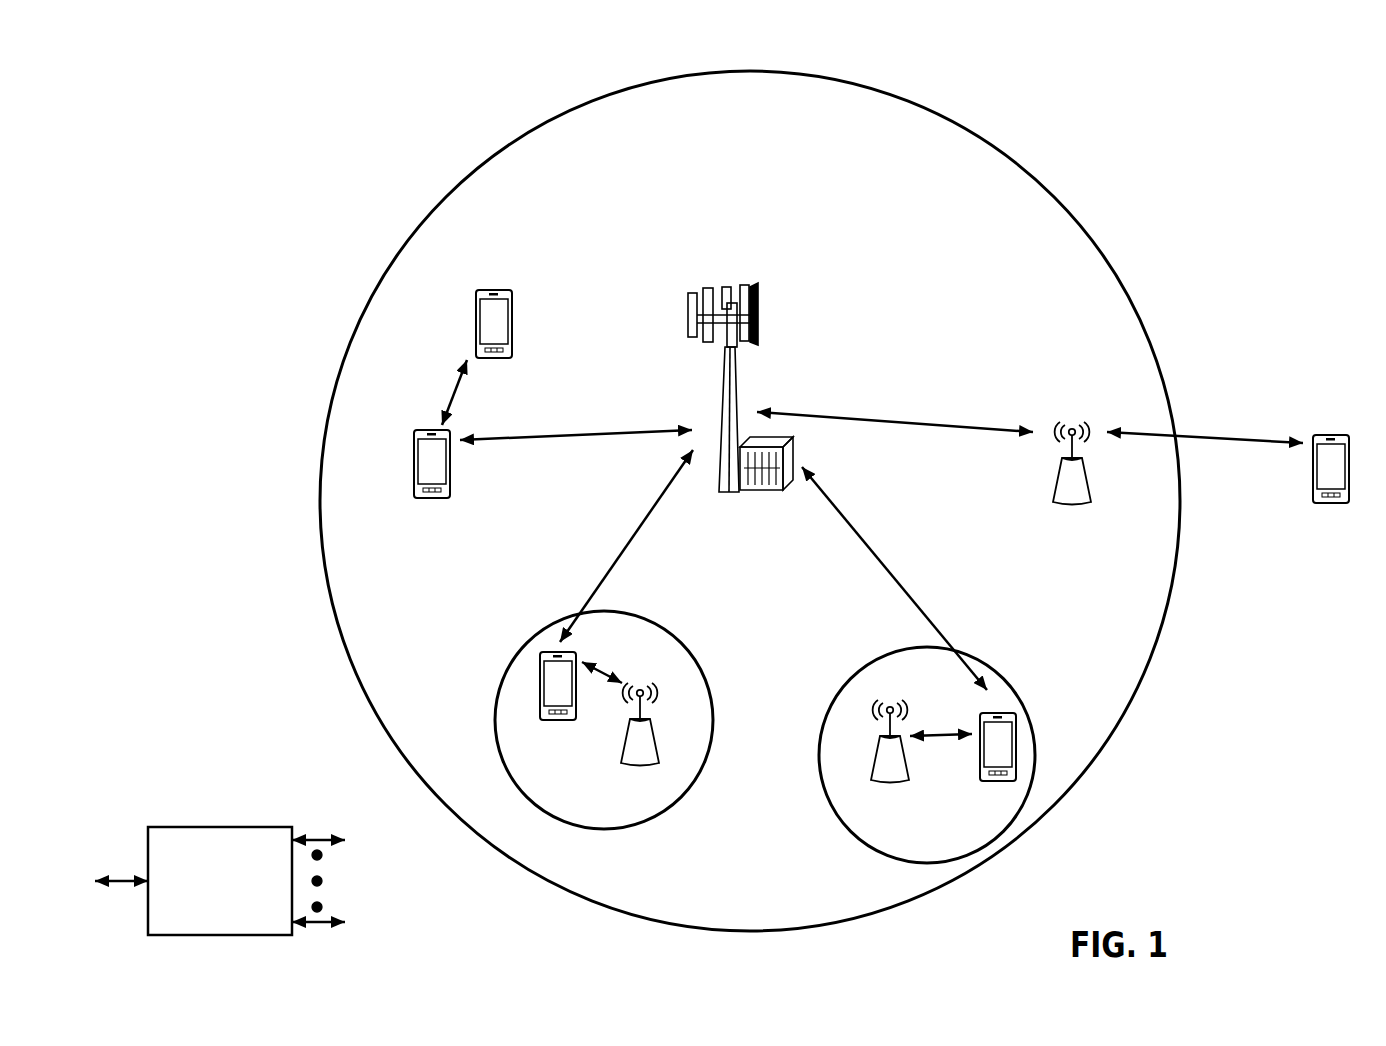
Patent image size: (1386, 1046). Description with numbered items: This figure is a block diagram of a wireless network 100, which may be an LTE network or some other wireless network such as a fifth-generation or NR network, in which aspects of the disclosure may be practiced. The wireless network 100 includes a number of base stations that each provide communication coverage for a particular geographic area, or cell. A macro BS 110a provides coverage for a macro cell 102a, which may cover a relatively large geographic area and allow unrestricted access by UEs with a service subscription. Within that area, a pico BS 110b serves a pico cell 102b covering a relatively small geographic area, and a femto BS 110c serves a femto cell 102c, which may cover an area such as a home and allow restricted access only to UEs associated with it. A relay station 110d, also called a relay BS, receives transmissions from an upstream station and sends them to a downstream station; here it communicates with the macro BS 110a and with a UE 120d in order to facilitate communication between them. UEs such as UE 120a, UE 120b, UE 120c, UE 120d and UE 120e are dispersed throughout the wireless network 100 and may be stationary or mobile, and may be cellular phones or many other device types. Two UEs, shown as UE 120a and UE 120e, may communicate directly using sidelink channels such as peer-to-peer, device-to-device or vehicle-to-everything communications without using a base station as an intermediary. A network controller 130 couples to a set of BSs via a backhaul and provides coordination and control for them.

The wireless network 100 is at (207, 70).
The macro cell 102a is at (1033, 177).
The pico cell 102b is at (696, 656).
The femto cell 102c is at (862, 668).
The macro BS 110a is at (731, 280).
The pico BS 110b is at (657, 750).
The femto BS 110c is at (873, 770).
The relay station 110d is at (1072, 422).
The UE 120a is at (414, 460).
The UE 120b is at (543, 722).
The UE 120c is at (982, 782).
The UE 120d is at (1340, 435).
The UE 120e is at (476, 312).
The network controller 130 is at (218, 827).